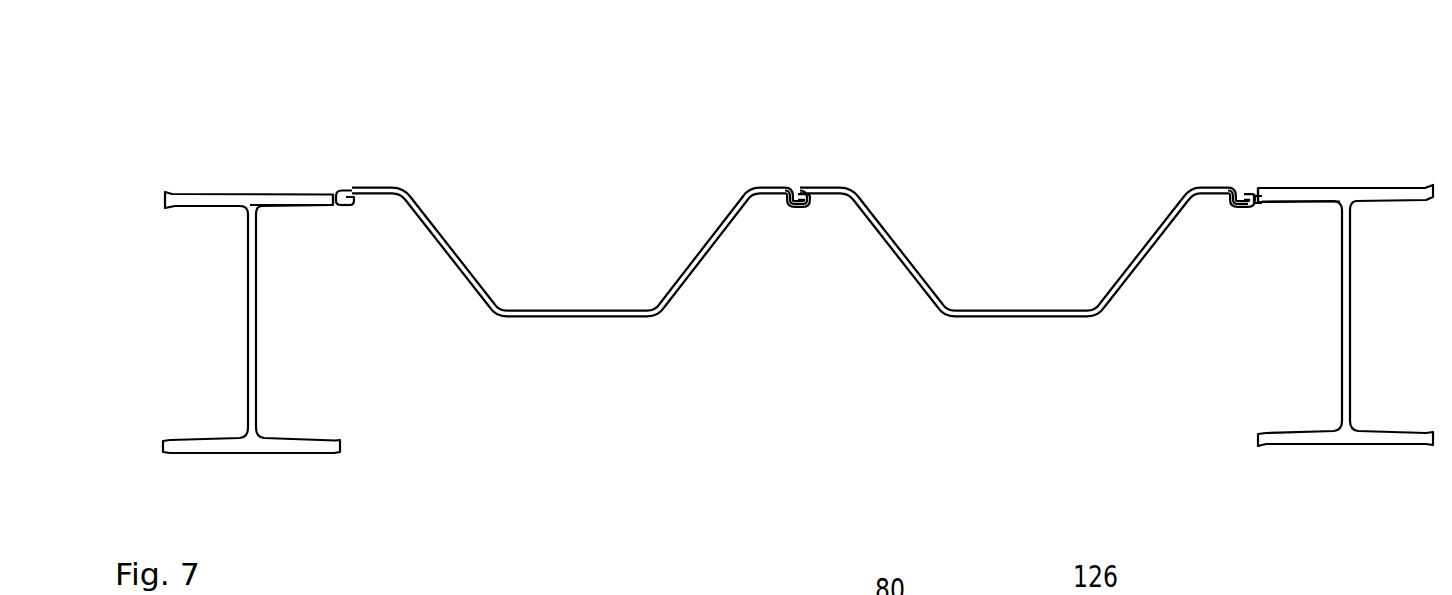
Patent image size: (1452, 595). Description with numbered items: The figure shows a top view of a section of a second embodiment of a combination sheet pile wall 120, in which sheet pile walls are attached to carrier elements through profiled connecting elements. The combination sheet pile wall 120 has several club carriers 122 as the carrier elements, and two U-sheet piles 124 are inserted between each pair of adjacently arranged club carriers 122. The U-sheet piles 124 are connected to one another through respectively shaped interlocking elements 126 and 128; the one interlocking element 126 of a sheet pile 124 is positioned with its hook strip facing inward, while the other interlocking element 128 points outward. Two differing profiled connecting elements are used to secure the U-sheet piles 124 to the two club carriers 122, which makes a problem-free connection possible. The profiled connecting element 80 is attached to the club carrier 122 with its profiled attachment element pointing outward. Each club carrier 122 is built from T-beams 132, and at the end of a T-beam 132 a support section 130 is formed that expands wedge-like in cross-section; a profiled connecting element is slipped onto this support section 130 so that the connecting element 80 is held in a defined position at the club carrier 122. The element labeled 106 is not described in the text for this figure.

The combination sheet pile wall 120 is at (778, 110).
The club carrier 122 is at (235, 200).
The U-sheet pile 124 is at (517, 311).
The interlocking element 126 is at (805, 203).
The interlocking element 128 is at (780, 203).
The profiled connecting element 80 is at (338, 196).
The support section 130 is at (332, 194).
The T-beam 132 is at (282, 205).
The hook portion 106 is at (347, 207).